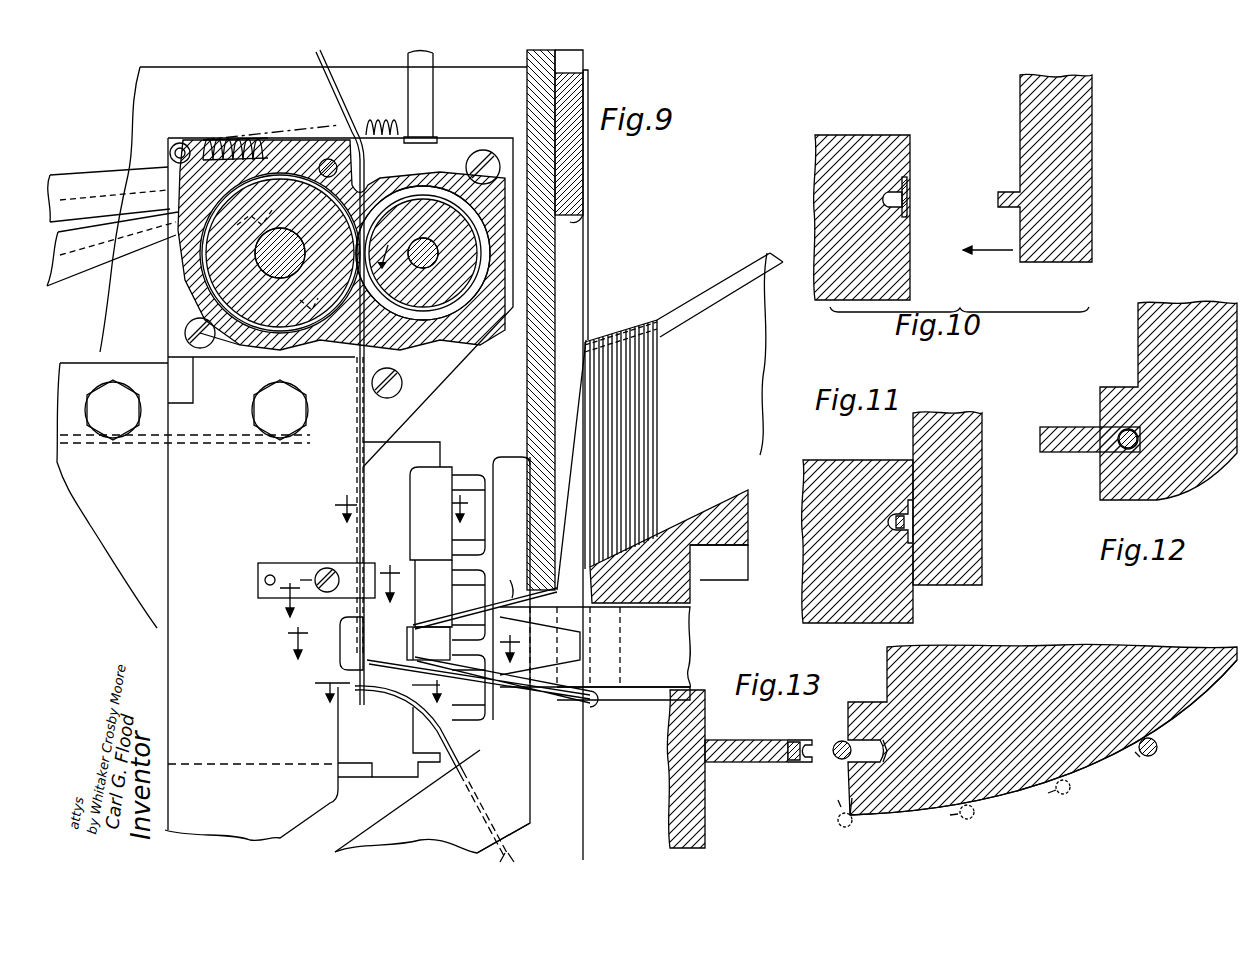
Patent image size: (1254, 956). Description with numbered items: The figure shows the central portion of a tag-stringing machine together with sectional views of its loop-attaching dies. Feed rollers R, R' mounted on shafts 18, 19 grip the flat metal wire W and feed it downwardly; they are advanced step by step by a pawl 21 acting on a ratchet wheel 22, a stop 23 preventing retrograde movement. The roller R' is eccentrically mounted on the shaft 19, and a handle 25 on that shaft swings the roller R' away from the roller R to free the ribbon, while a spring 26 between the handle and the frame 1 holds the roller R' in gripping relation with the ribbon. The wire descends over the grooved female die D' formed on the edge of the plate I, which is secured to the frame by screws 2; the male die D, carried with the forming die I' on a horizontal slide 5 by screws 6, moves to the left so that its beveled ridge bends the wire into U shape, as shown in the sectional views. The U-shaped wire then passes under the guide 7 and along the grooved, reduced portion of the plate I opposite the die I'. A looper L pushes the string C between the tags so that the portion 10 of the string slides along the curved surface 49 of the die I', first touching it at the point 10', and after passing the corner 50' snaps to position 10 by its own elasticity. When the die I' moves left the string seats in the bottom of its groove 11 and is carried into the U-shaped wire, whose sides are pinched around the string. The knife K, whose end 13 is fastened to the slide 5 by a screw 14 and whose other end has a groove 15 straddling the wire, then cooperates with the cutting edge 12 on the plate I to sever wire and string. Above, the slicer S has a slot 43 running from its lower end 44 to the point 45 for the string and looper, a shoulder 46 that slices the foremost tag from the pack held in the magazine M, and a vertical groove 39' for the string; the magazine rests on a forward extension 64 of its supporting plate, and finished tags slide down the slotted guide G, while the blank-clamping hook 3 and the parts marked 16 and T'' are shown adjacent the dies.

In FIG. 9, the frame 1 is at (293, 460).
In FIG. 13, the frame 1 is at (703, 727).
In FIG. 9, the screws 2 is at (268, 425).
In FIG. 11, the hook 3 is at (897, 512).
In FIG. 13, the hook 3 is at (790, 742).
In FIG. 9, the horizontal slide 5 is at (428, 442).
In FIG. 9, the screws 6 is at (464, 475).
In FIG. 9, the guide 7 is at (258, 565).
In FIG. 9, the portion of the string 10 is at (360, 574).
In FIG. 13, the portion of the string 10 is at (825, 769).
In FIG. 13, the point of string contact 10' is at (1003, 782).
In FIG. 9, the groove 11 is at (468, 514).
In FIG. 13, the groove 11 is at (852, 748).
In FIG. 9, the cutting edge 12 is at (352, 720).
In FIG. 9, the end of cutter 13 is at (508, 649).
In FIG. 9, the screw 14 is at (336, 600).
In FIG. 9, the groove 15 is at (379, 699).
In FIG. 9, the direction arrow 16 is at (321, 688).
In FIG. 9, the shaft 18 is at (280, 253).
In FIG. 9, the shaft 19 is at (438, 250).
In FIG. 9, the pawl 21 is at (68, 175).
In FIG. 9, the ratchet wheel 22 is at (235, 345).
In FIG. 9, the stop 23 is at (72, 268).
In FIG. 9, the handle 25 is at (435, 95).
In FIG. 9, the spring 26 is at (243, 142).
In FIG. 9, the groove 39' is at (581, 320).
In FIG. 9, the slot 43 is at (580, 265).
In FIG. 9, the lower end of slicer 44 is at (610, 630).
In FIG. 9, the upper point of slot 45 is at (590, 222).
In FIG. 9, the shoulder 46 is at (592, 340).
In FIG. 13, the curved surface 49 is at (1190, 708).
In FIG. 13, the corner 50' is at (865, 823).
In FIG. 9, the forward extension 64 is at (748, 548).
In FIG. 9, the string C is at (511, 588).
In FIG. 9, the male die D is at (416, 513).
In FIG. 10, the male die D is at (1027, 168).
In FIG. 11, the male die D is at (960, 498).
In FIG. 9, the female die D' is at (413, 564).
In FIG. 10, the female die D' is at (862, 200).
In FIG. 11, the female die D' is at (857, 524).
In FIG. 9, the slotted guide G is at (520, 808).
In FIG. 9, the die plate I is at (341, 638).
In FIG. 12, the die plate I is at (1090, 420).
In FIG. 13, the die plate I is at (746, 769).
In FIG. 9, the forming die I' is at (428, 643).
In FIG. 12, the forming die I' is at (1168, 413).
In FIG. 13, the forming die I' is at (1042, 712).
In FIG. 9, the knife K is at (425, 710).
In FIG. 9, the looper L is at (645, 672).
In FIG. 9, the magazine M is at (714, 290).
In FIG. 9, the feed roller R is at (341, 264).
In FIG. 9, the feed roller R' is at (423, 276).
In FIG. 9, the slicer S is at (588, 175).
In FIG. 9, the table T'' is at (604, 725).
In FIG. 9, the flat metal wire W is at (345, 112).
In FIG. 10, the flat metal wire W is at (910, 190).